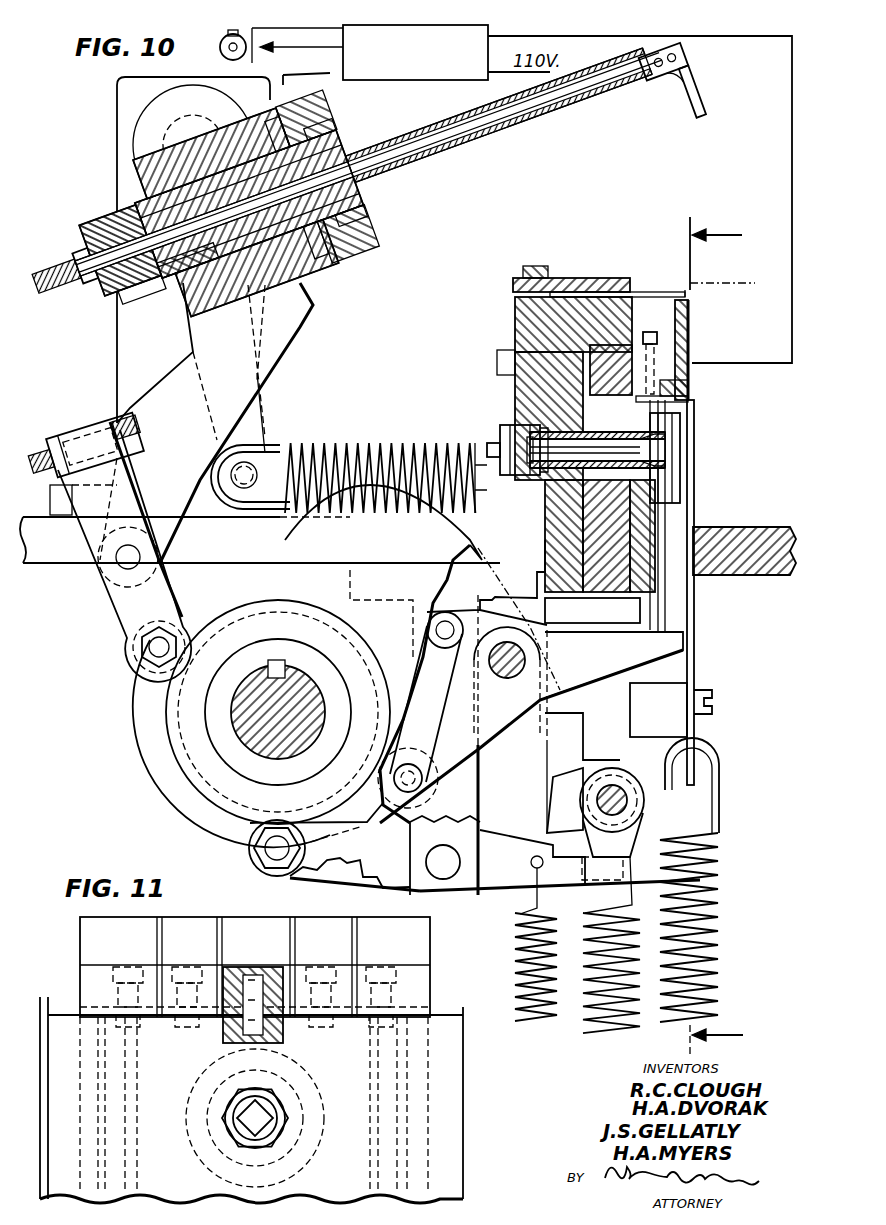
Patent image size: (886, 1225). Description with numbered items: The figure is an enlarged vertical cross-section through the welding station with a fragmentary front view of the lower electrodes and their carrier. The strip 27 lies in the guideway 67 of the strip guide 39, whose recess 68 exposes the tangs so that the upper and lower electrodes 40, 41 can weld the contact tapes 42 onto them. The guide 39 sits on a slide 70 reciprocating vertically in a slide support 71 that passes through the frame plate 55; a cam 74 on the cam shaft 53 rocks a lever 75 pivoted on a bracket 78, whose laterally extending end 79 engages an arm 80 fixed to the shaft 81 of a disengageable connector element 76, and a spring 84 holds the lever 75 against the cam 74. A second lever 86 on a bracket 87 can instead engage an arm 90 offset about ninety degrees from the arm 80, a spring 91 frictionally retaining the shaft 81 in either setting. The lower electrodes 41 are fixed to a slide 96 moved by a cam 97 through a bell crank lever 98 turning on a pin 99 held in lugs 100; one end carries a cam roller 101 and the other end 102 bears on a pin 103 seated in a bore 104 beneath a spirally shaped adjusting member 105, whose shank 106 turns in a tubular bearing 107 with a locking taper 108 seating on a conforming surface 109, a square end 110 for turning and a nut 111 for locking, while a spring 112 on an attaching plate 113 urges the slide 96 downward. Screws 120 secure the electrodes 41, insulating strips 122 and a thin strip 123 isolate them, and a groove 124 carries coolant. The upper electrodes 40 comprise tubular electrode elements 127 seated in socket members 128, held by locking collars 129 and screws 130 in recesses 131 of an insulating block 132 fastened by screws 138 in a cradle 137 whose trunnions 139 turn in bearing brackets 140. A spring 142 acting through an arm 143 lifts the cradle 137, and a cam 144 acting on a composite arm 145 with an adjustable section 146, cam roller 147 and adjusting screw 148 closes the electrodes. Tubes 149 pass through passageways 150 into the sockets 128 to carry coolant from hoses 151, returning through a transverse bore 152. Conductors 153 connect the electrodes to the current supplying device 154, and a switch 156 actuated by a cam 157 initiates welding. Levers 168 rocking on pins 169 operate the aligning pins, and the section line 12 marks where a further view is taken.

In FIG. 10, the section line 12 is at (718, 639).
In FIG. 10, the strip 27 is at (645, 287).
In FIG. 10, the strip guide 39 is at (511, 278).
In FIG. 10, the upper electrodes 40 is at (686, 103).
In FIG. 10, the lower electrodes 41 is at (690, 310).
In FIG. 11, the lower electrodes 41 is at (95, 937).
In FIG. 10, the contact tapes 42 is at (718, 282).
In FIG. 10, the cam shaft 53 is at (253, 760).
In FIG. 10, the frame plate 55 is at (768, 528).
In FIG. 10, the guideway 67 is at (565, 290).
In FIG. 10, the recess 68 is at (640, 270).
In FIG. 10, the slide 70 is at (508, 752).
In FIG. 10, the slide support 71 is at (695, 668).
In FIG. 10, the cam 74 is at (200, 800).
In FIG. 10, the lever 75 is at (396, 886).
In FIG. 10, the disengageable connector element 76 is at (634, 773).
In FIG. 10, the bracket 78 is at (460, 890).
In FIG. 10, the laterally extending end 79 is at (600, 882).
In FIG. 10, the arm 80 is at (622, 845).
In FIG. 10, the shaft 81 is at (612, 782).
In FIG. 10, the spring 84 is at (518, 945).
In FIG. 10, the lever 86 is at (338, 882).
In FIG. 10, the bracket 87 is at (458, 797).
In FIG. 10, the arm 90 is at (553, 778).
In FIG. 10, the spring 91 is at (600, 1028).
In FIG. 10, the slide 96 is at (692, 394).
In FIG. 11, the slide 96 is at (360, 1125).
In FIG. 10, the cam 97 is at (210, 825).
In FIG. 10, the bell crank lever 98 is at (485, 750).
In FIG. 10, the pin 99 is at (503, 680).
In FIG. 10, the lugs 100 is at (578, 714).
In FIG. 10, the cam roller 101 is at (400, 800).
In FIG. 10, the other end 102 is at (688, 645).
In FIG. 10, the pin 103 is at (690, 625).
In FIG. 10, the bore 104 is at (680, 600).
In FIG. 10, the spirally shaped adjusting member 105 is at (672, 465).
In FIG. 11, the spirally shaped adjusting member 105 is at (312, 1130).
In FIG. 10, the shank 106 is at (535, 440).
In FIG. 10, the tubular bearing 107 is at (548, 440).
In FIG. 10, the locking taper 108 is at (648, 455).
In FIG. 10, the conforming surface 109 is at (662, 440).
In FIG. 10, the square end 110 is at (495, 445).
In FIG. 11, the square end 110 is at (232, 1130).
In FIG. 10, the nut 111 is at (527, 440).
In FIG. 11, the nut 111 is at (230, 1096).
In FIG. 10, the spring 112 is at (722, 888).
In FIG. 10, the attaching plate 113 is at (700, 718).
In FIG. 10, the screws 120 is at (648, 340).
In FIG. 11, the strips of insulation 122 is at (195, 925).
In FIG. 10, the thin strip of insulation 123 is at (690, 380).
In FIG. 11, the thin strip of insulation 123 is at (147, 1022).
In FIG. 10, the groove 124 is at (685, 397).
In FIG. 11, the groove 124 is at (322, 1025).
In FIG. 10, the tubular metal electrode elements 127 is at (440, 158).
In FIG. 10, the tubular metal socket members 128 is at (165, 186).
In FIG. 10, the locking collars 129 is at (362, 222).
In FIG. 10, the screws 130 is at (372, 210).
In FIG. 10, the recesses 131 is at (128, 210).
In FIG. 10, the block of insulating material 132 is at (82, 232).
In FIG. 10, the cradle 137 is at (157, 165).
In FIG. 10, the screws 138 is at (312, 112).
In FIG. 10, the trunnions 139 is at (160, 135).
In FIG. 10, the bearing brackets 140 is at (125, 98).
In FIG. 10, the spring 142 is at (378, 443).
In FIG. 10, the arm 143 is at (280, 424).
In FIG. 10, the cam 144 is at (268, 550).
In FIG. 10, the composite arm 145 is at (165, 385).
In FIG. 10, the adjustable section 146 is at (125, 597).
In FIG. 10, the cam roller 147 is at (125, 653).
In FIG. 10, the adjusting screw 148 is at (45, 435).
In FIG. 10, the tubes 149 is at (468, 145).
In FIG. 10, the passageways 150 is at (180, 302).
In FIG. 10, the hoses 151 is at (42, 270).
In FIG. 10, the transversely disposed bore 152 is at (165, 288).
In FIG. 10, the conductors 153 is at (332, 66).
In FIG. 10, the device for supplying welding current 154 is at (413, 80).
In FIG. 10, the switch 156 is at (275, 44).
In FIG. 10, the cam 157 is at (220, 52).
In FIG. 10, the levers 168 is at (495, 603).
In FIG. 10, the pins 169 is at (444, 650).